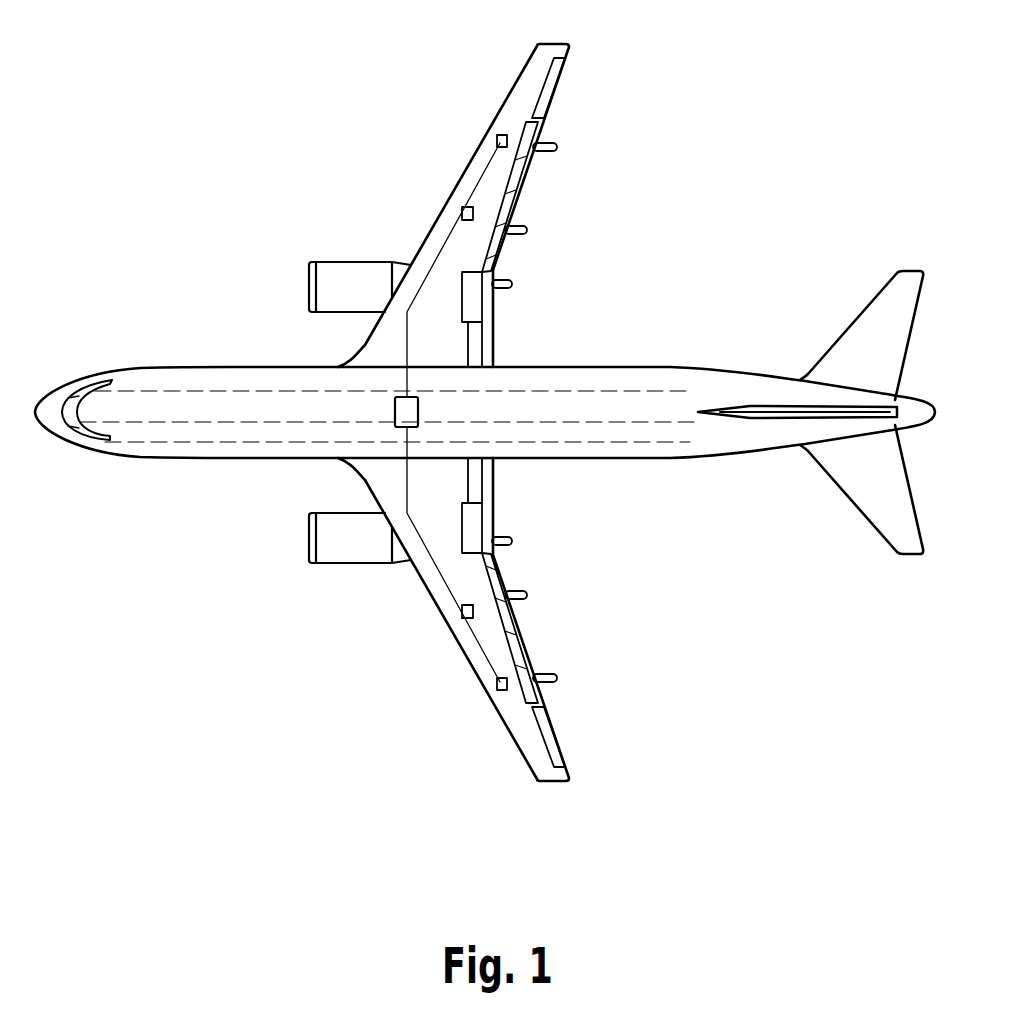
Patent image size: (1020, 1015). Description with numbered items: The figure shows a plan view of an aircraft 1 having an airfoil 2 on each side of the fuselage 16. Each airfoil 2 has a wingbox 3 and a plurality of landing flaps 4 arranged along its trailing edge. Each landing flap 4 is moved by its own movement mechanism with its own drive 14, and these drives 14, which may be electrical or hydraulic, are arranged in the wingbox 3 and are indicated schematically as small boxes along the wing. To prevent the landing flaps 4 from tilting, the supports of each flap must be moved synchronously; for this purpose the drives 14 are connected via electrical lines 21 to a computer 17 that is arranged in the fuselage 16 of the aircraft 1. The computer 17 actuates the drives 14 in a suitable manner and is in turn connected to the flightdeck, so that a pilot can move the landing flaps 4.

The aircraft 1 is at (143, 295).
The airfoil 2 is at (376, 347).
The wingbox 3 is at (522, 85).
The landing flaps 4 is at (512, 180).
The drive 14 is at (497, 141).
The fuselage 16 is at (630, 378).
The computer 17 is at (418, 407).
The electrical lines 21 is at (440, 258).